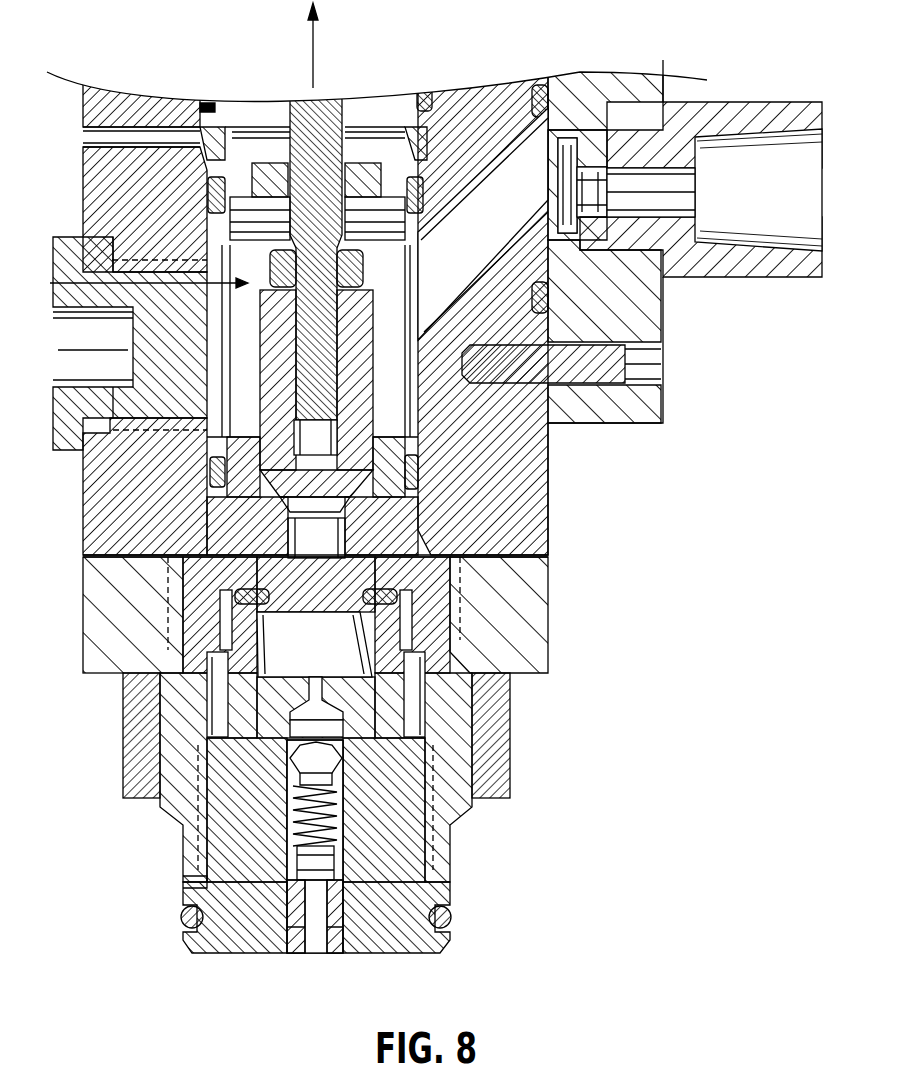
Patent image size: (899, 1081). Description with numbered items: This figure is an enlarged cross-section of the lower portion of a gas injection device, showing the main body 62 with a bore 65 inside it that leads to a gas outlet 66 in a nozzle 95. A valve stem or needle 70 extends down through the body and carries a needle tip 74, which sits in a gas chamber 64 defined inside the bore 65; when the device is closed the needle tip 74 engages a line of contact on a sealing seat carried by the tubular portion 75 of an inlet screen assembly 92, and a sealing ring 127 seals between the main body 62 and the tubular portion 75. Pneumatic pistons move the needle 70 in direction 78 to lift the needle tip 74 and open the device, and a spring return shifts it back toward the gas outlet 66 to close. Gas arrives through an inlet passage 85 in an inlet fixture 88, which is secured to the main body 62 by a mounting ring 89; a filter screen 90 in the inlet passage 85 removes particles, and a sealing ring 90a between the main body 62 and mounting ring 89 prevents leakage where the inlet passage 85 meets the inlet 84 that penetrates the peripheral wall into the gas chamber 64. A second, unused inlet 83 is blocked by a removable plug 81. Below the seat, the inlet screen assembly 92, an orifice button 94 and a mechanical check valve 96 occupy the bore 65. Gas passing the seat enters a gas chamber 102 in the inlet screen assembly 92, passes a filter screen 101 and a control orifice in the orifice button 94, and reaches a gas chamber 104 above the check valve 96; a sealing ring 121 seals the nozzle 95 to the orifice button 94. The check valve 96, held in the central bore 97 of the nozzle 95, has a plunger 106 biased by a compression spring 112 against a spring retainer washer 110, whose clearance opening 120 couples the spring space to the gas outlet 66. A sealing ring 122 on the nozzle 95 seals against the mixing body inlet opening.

The main body 62 is at (537, 490).
The gas chamber 64 is at (131, 285).
The bore 65 is at (415, 412).
The gas outlet 66 is at (322, 953).
The valve stem or needle 70 is at (303, 127).
The needle tip 74 is at (265, 372).
The tubular portion 75 is at (280, 575).
The direction 78 is at (313, 40).
The removable plug 81 is at (68, 242).
The unused inlet 83 is at (135, 432).
The inlet 84 is at (517, 190).
The inlet passage 85 is at (665, 188).
The inlet fixture 88 is at (740, 102).
The mounting ring 89 is at (655, 394).
The filter screen 90 is at (598, 193).
The sealing ring 90a is at (420, 462).
The inlet screen assembly 92 is at (403, 602).
The orifice button 94 is at (357, 713).
The nozzle 95 is at (420, 943).
The mechanical check valve 96 is at (343, 828).
The central bore 97 is at (335, 877).
The filter screen 101 is at (298, 520).
The gas chamber 102 is at (320, 642).
The gas chamber 104 is at (340, 717).
The plunger 106 is at (330, 760).
The spring retainer washer 110 is at (343, 920).
The compression spring 112 is at (350, 795).
The clearance opening 120 is at (318, 882).
The sealing ring 121 is at (377, 740).
The sealing ring 122 is at (453, 915).
The sealing ring 127 is at (427, 563).